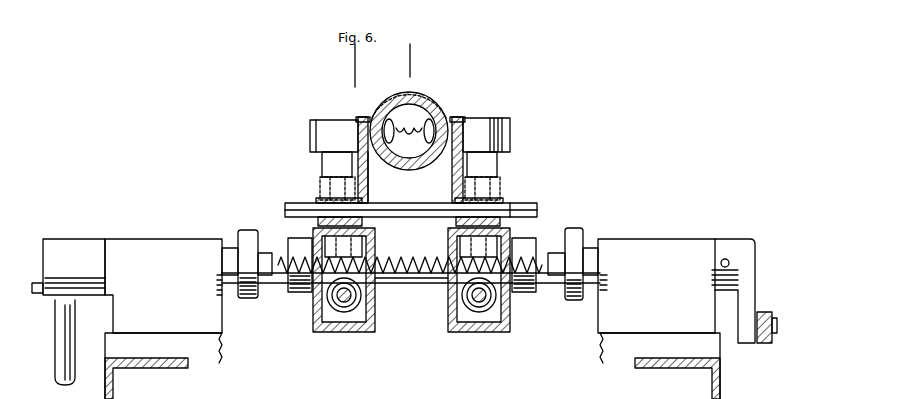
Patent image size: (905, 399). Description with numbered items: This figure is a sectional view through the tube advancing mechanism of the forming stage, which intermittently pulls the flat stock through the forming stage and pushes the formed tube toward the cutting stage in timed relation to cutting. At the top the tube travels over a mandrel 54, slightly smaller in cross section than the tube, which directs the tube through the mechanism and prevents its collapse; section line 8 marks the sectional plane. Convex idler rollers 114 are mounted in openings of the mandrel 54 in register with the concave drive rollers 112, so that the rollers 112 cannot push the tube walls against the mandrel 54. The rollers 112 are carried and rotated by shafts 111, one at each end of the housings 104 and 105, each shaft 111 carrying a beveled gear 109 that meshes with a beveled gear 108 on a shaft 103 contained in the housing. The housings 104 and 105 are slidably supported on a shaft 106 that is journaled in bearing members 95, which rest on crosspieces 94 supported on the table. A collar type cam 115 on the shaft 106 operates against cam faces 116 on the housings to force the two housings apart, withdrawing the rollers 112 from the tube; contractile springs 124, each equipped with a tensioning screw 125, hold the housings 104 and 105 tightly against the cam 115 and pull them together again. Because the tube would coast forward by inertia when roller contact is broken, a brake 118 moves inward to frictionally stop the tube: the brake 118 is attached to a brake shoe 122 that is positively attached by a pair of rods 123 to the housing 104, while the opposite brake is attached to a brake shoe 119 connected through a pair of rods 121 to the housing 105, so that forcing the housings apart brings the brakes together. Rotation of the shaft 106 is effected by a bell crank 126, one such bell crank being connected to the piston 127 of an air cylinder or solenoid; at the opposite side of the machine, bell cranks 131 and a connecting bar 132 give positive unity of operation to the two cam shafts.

The bearing ring outer race 8 is at (409, 106).
The mandrel 54 is at (414, 95).
The convex idler rollers 114 is at (409, 141).
The brake 118 is at (361, 116).
The brake shoe 119 is at (456, 170).
The brake shoe 122 is at (370, 186).
The rollers 112 is at (324, 127).
The shafts 111 is at (325, 187).
The rods 121 is at (285, 207).
The rods 123 is at (534, 211).
The housing 105 is at (358, 333).
The housing 104 is at (462, 333).
The shafts 103 is at (372, 312).
The beveled gears 108 is at (362, 297).
The beveled gears 109 is at (375, 286).
The cam faces 116 is at (384, 258).
The collar type cams 115 is at (408, 262).
The shaft 106 is at (230, 258).
The contractile springs 124 is at (303, 273).
The tensioning screw 125 is at (556, 280).
The bell crank 126 is at (72, 252).
The bearing members 95 is at (160, 250).
The piston 127 is at (60, 345).
The crosspieces 94 is at (103, 345).
The bell cranks 131 is at (741, 248).
The connecting bar 132 is at (764, 312).